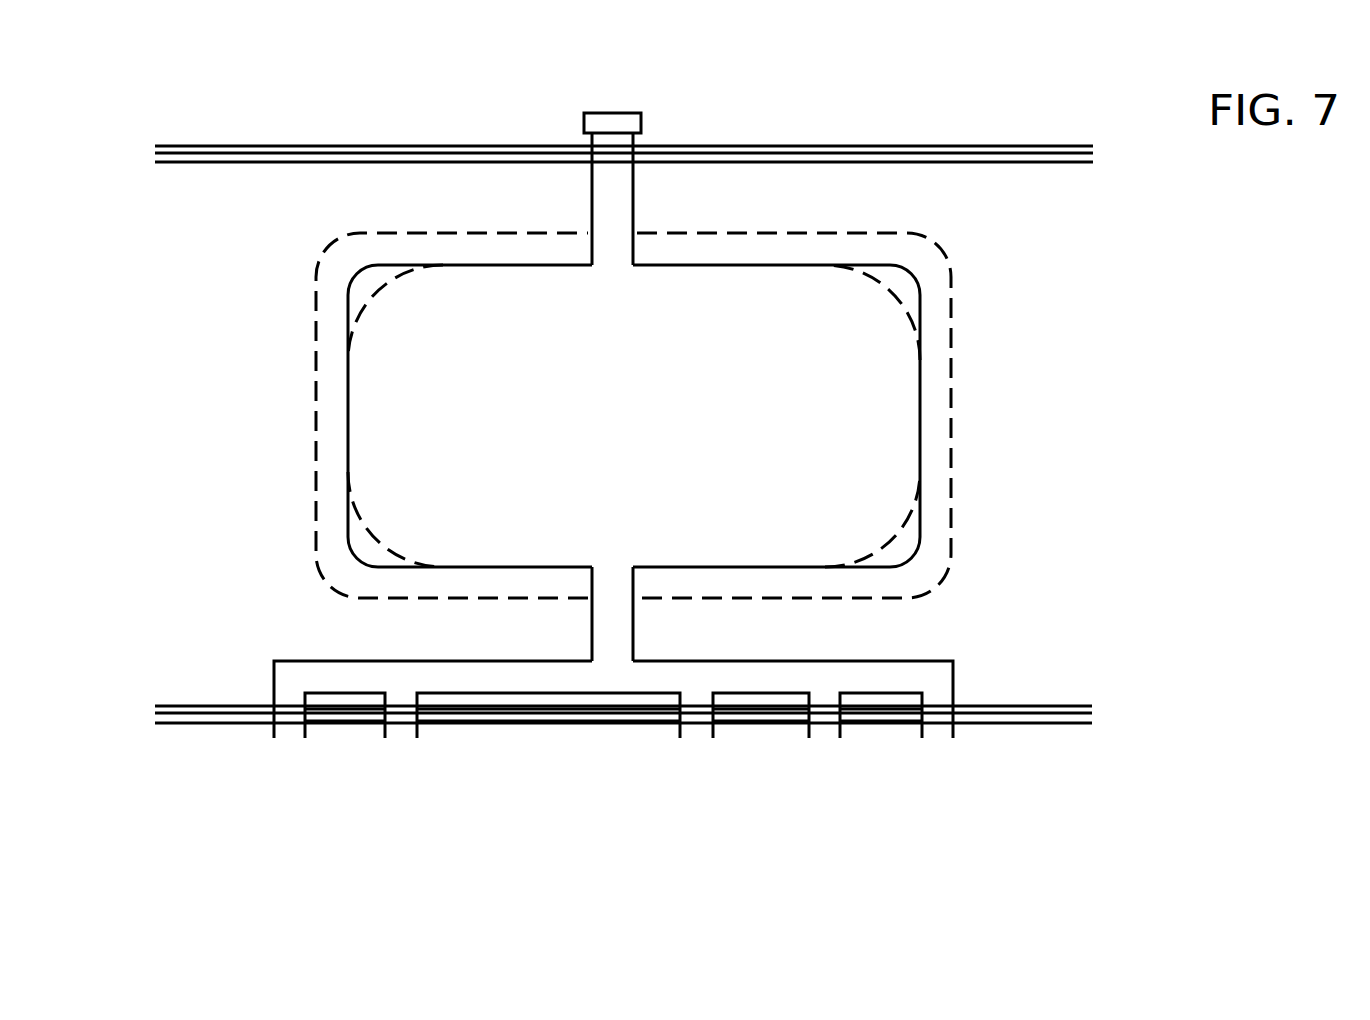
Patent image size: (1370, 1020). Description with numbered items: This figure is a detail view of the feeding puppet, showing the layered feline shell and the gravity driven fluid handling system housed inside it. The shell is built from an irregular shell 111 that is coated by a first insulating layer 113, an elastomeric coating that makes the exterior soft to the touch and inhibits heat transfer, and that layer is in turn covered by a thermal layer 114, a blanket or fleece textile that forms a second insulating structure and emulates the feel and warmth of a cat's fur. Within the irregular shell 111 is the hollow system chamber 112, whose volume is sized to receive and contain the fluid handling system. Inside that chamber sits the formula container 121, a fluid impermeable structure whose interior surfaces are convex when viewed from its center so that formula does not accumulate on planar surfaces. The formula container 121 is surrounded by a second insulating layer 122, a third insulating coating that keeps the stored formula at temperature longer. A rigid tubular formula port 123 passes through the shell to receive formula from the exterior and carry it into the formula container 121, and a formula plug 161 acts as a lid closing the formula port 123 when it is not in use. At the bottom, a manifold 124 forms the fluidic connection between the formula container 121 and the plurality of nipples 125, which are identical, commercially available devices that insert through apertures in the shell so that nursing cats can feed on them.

The irregular shell 111 is at (935, 146).
The first insulating layer 113 is at (1017, 150).
The thermal layer 114 is at (1043, 162).
The system chamber 112 is at (937, 368).
The formula container 121 is at (830, 318).
The second insulating layer 122 is at (910, 537).
The formula port 123 is at (620, 188).
The manifold 124 is at (849, 680).
The plurality of nipples 125 is at (398, 735).
The formula plug 161 is at (622, 113).